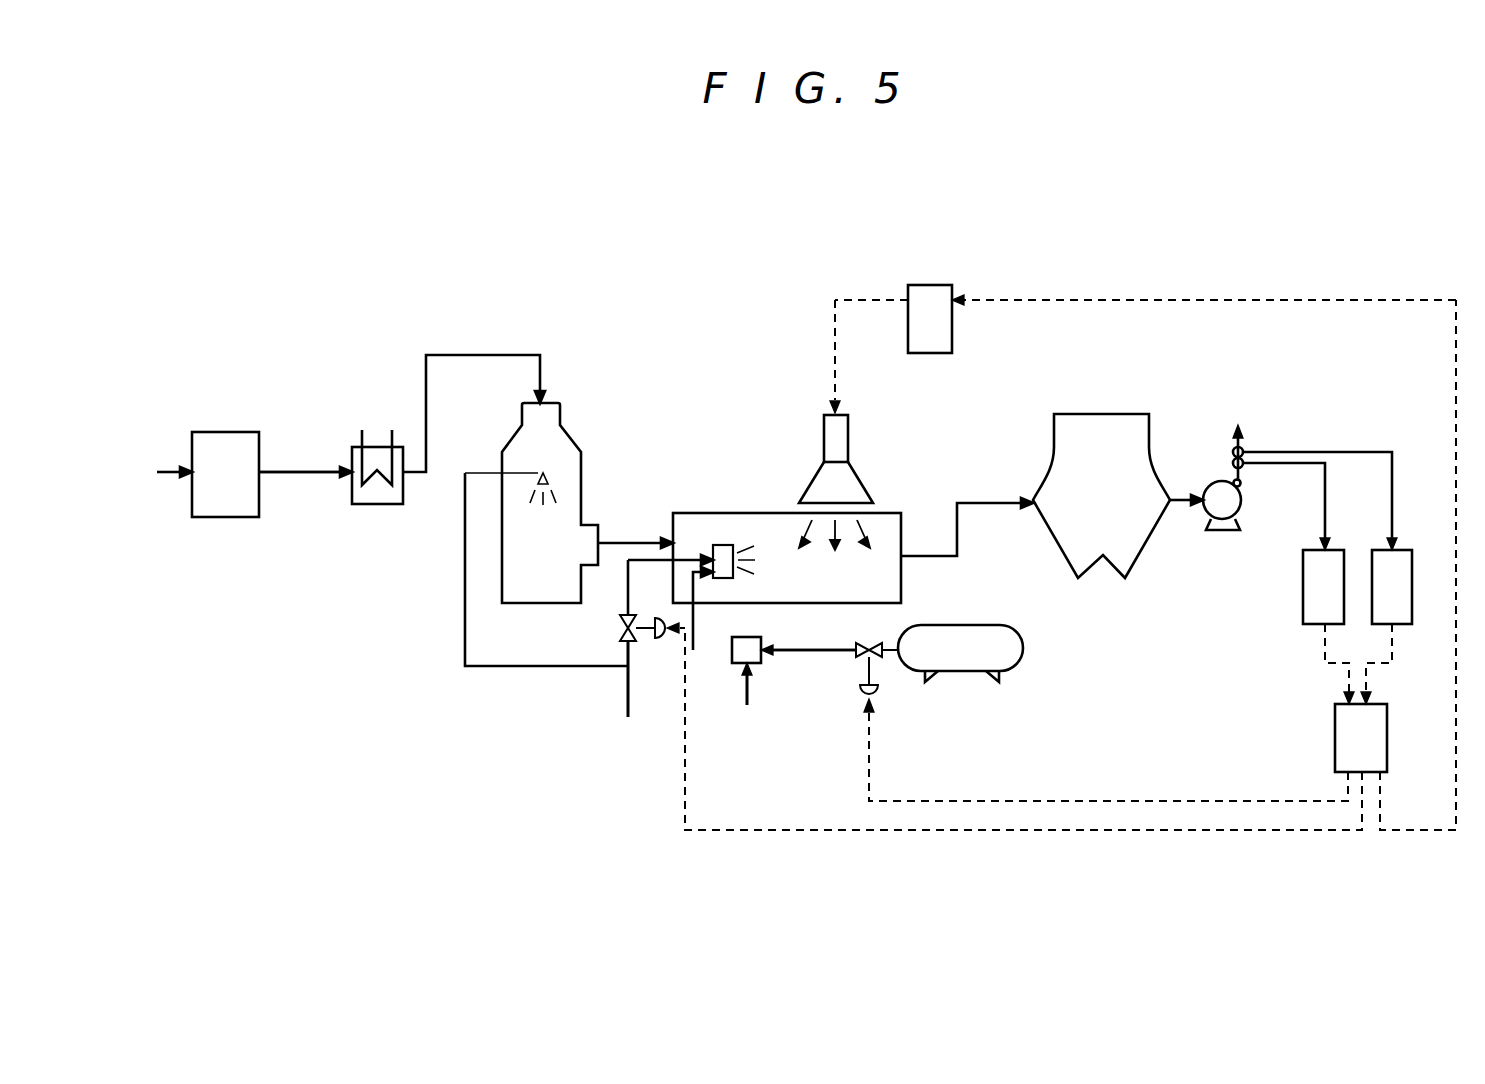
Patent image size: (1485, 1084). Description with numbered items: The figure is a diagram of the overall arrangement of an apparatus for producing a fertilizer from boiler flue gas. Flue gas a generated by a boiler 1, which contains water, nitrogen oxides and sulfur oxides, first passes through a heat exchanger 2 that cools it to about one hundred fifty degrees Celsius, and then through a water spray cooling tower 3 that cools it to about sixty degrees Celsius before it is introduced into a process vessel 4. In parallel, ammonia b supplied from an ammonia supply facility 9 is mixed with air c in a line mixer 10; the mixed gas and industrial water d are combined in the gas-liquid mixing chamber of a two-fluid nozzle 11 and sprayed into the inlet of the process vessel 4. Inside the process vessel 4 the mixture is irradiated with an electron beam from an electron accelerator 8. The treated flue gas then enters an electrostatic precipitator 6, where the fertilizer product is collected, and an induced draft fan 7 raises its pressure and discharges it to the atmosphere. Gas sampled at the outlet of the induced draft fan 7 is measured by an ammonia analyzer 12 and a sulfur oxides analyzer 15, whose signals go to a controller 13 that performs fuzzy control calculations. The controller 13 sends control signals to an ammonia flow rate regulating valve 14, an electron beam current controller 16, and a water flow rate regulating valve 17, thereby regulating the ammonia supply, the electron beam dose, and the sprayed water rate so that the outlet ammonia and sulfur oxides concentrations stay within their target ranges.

The boiler 1 is at (222, 517).
The heat exchanger 2 is at (360, 504).
The water spray cooling tower 3 is at (540, 603).
The process vessel 4 is at (693, 513).
The electrostatic precipitator 6 is at (1054, 450).
The induced draft fan 7 is at (1222, 530).
The electron accelerator 8 is at (848, 443).
The ammonia supply facility 9 is at (1023, 640).
The line mixer 10 is at (750, 637).
The two-fluid nozzle 11 is at (725, 545).
The ammonia analyzer 12 is at (1303, 595).
The controller 13 is at (1333, 740).
The ammonia flow rate regulating valve 14 is at (882, 690).
The sulfur oxides analyzer 15 is at (1412, 590).
The electron beam current controller 16 is at (952, 325).
The water flow rate regulating valve 17 is at (660, 640).
The flue gas a is at (300, 470).
The ammonia b is at (828, 652).
The air c is at (748, 698).
The industrial water d is at (625, 688).